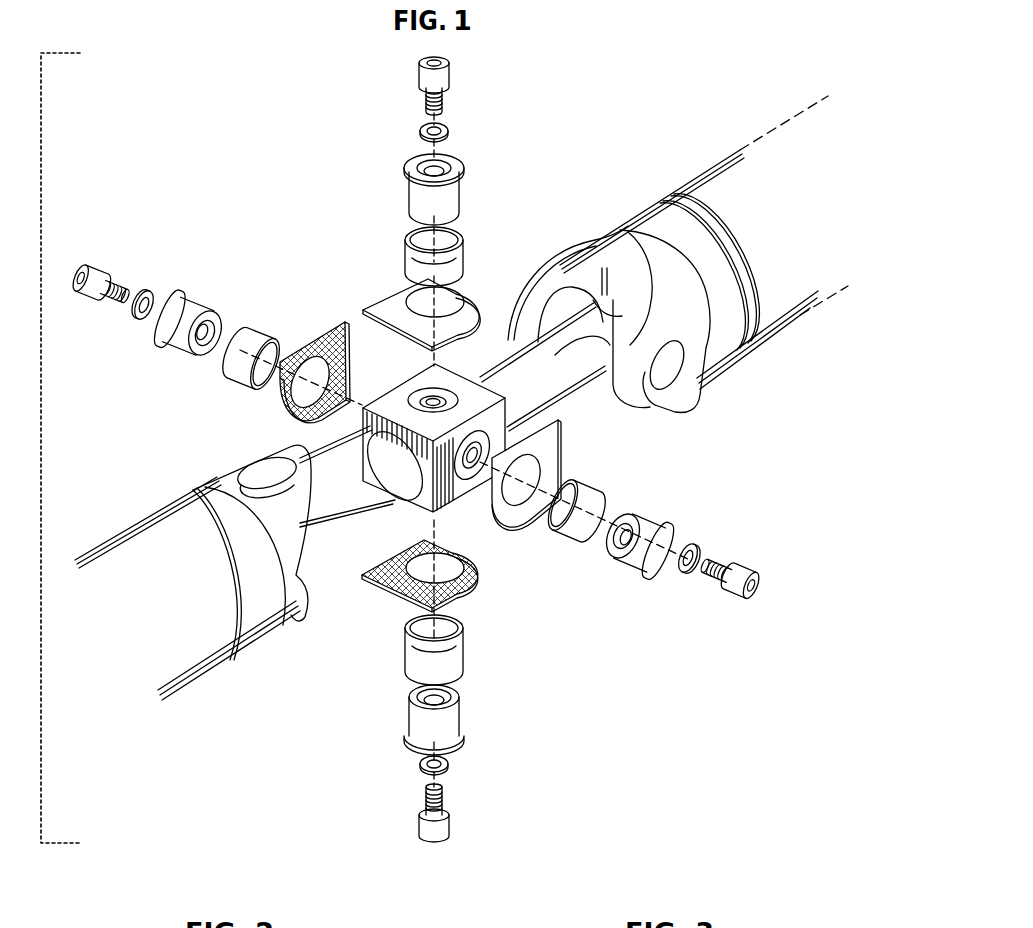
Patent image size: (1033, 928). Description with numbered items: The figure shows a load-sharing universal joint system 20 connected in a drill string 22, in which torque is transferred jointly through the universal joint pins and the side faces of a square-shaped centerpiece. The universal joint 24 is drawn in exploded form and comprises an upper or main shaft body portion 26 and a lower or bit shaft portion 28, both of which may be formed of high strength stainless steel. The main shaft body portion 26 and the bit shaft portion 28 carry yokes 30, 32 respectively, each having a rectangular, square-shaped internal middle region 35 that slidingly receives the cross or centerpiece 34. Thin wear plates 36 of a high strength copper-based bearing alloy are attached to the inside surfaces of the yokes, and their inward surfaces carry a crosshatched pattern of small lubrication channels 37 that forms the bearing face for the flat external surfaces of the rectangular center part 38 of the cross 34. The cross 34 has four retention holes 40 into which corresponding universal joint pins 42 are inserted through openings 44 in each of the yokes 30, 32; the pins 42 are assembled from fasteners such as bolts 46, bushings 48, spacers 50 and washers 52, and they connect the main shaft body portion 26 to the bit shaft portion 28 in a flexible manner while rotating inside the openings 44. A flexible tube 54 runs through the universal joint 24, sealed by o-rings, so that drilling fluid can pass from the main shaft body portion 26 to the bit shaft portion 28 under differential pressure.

The universal joint system 20 is at (324, 193).
The drill string 22 is at (798, 114).
The universal joint 24 is at (290, 218).
The main shaft body portion 26 is at (740, 370).
The bit shaft portion 28 is at (98, 525).
The yoke 30 is at (620, 395).
The yoke 32 is at (216, 478).
The cross 34 is at (388, 383).
The internal middle region 35 is at (585, 272).
The wear plate 36 is at (380, 308).
The lubrication channels 37 is at (320, 410).
The rectangular center part 38 is at (443, 372).
The retention hole 40 is at (462, 480).
The universal joint pin 42 is at (480, 181).
The opening 44 is at (668, 388).
The bolt 46 is at (422, 102).
The bushing 48 is at (462, 259).
The spacer 50 is at (412, 202).
The washer 52 is at (449, 131).
The flexible tube 54 is at (544, 393).